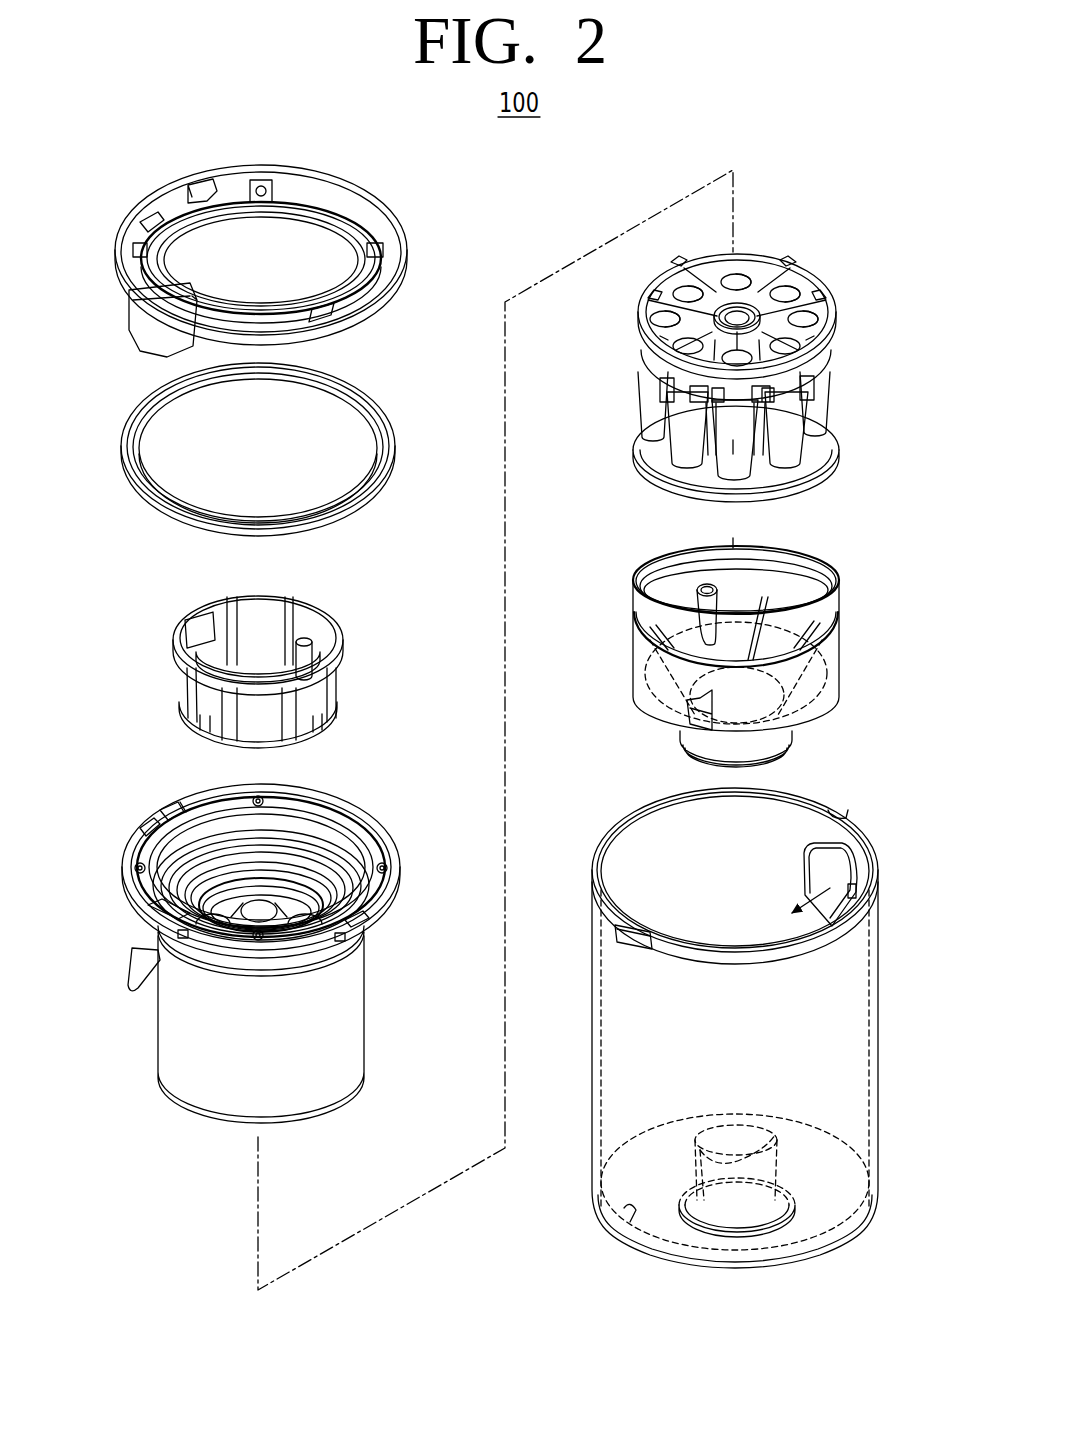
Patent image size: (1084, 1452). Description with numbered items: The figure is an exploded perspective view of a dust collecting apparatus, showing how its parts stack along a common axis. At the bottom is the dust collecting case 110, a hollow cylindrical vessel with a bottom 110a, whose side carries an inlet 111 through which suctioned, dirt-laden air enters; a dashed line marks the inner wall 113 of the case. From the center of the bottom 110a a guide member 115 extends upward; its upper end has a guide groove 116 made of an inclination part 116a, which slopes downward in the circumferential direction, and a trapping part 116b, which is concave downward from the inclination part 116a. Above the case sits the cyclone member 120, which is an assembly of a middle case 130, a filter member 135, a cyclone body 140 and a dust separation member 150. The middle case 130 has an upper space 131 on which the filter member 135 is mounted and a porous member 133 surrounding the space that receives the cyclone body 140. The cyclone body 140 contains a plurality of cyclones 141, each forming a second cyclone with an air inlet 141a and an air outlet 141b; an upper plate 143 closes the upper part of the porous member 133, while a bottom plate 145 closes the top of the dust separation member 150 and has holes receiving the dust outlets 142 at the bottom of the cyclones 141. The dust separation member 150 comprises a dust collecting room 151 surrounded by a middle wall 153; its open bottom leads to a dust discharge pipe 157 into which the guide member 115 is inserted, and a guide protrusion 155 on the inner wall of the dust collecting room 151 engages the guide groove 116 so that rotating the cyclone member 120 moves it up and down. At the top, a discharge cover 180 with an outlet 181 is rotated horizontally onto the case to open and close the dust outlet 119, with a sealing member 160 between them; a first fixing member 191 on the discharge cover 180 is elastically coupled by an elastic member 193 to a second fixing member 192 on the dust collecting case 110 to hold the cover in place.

The dust collecting case 110 is at (736, 1086).
The bottom 110a is at (627, 1216).
The inlet 111 is at (862, 893).
The inner wall 113 is at (878, 996).
The guide member 115 is at (760, 1199).
The guide groove 116 is at (731, 1258).
The inclination part 116a is at (742, 1178).
The trapping part 116b is at (728, 1178).
The dust outlet 119 is at (836, 812).
The cyclone member 120 is at (532, 428).
The middle case 130 is at (255, 939).
The upper space 131 is at (294, 832).
The porous member 133 is at (362, 1000).
The filter member 135 is at (346, 660).
The cyclone body 140 is at (736, 395).
The cyclones 141 is at (812, 472).
The air inlet 141a is at (812, 362).
The air outlet 141b is at (800, 336).
The dust outlets 142 is at (800, 493).
The upper plate 143 is at (806, 307).
The bottom plate 145 is at (790, 437).
The dust separation member 150 is at (725, 656).
The dust collecting room 151 is at (700, 650).
The middle wall 153 is at (836, 690).
The guide protrusion 155 is at (688, 716).
The dust discharge pipe 157 is at (796, 746).
The sealing member 160 is at (122, 440).
The discharge cover 180 is at (386, 214).
The outlet 181 is at (295, 234).
The first fixing member 191 is at (150, 303).
The second fixing member 192 is at (612, 930).
The elastic member 193 is at (131, 934).